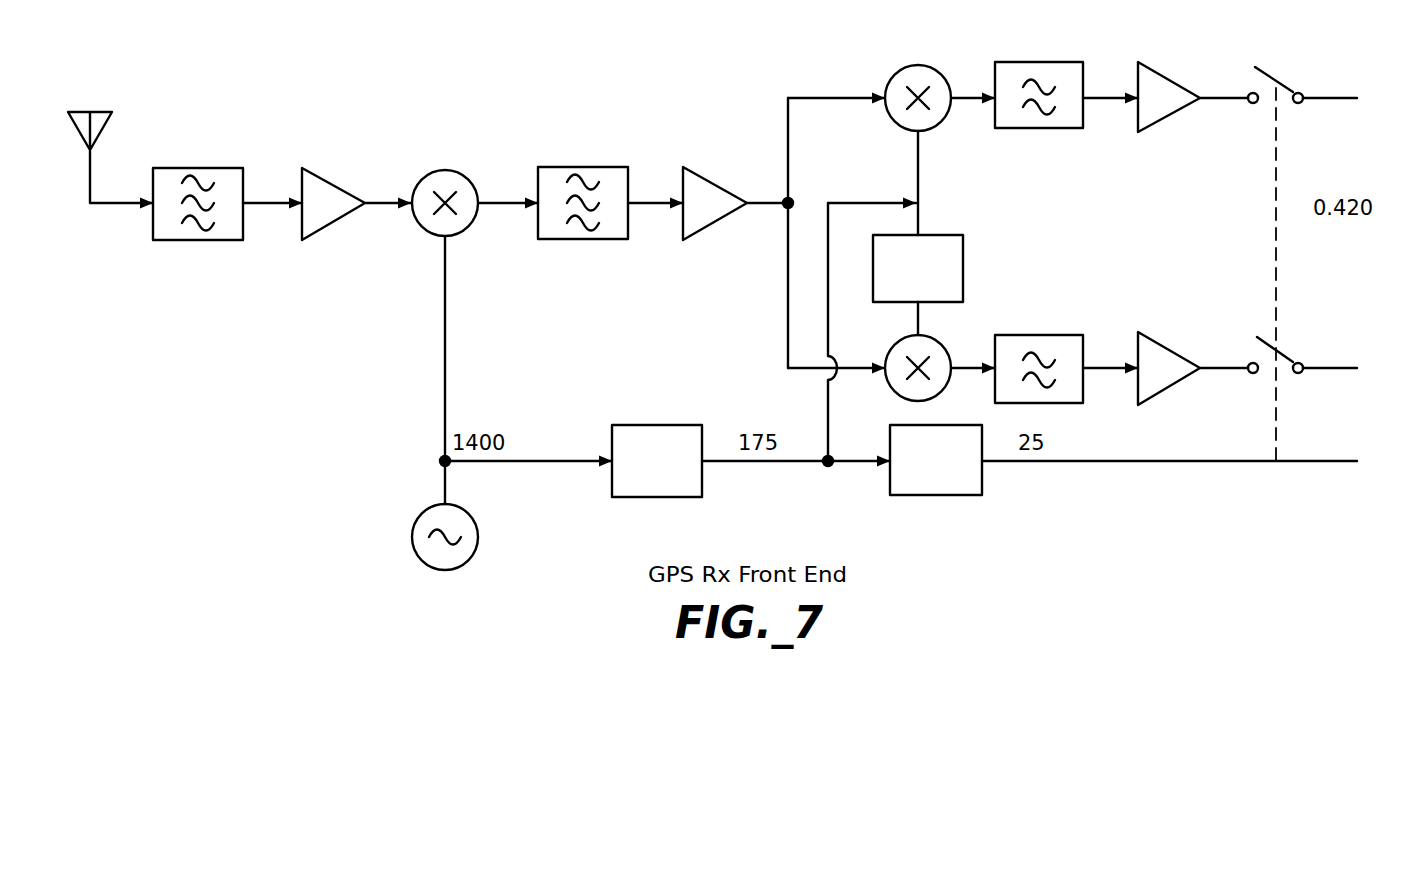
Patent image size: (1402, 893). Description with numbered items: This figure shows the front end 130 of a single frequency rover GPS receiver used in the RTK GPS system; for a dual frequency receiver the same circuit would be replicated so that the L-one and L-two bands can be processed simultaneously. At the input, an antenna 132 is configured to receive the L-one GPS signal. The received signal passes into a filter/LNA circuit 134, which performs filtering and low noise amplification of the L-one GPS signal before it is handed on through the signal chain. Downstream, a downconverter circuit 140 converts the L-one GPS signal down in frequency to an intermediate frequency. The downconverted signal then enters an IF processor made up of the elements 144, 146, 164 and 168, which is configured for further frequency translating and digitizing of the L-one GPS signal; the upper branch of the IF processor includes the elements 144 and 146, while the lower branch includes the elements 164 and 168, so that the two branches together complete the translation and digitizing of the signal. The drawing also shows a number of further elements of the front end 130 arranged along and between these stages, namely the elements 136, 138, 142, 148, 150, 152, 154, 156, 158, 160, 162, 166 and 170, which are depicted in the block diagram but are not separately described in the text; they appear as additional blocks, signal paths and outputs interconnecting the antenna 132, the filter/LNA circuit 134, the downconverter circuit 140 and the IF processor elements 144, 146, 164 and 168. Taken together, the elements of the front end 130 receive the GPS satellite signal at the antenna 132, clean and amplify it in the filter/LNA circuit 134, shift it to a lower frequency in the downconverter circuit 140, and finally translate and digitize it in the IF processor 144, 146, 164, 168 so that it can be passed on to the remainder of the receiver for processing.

The front end 130 is at (257, 477).
The antenna 132 is at (82, 112).
The filter/LNA circuit 134 is at (183, 168).
The amplifier 136 is at (330, 180).
The mixer 138 is at (455, 170).
The downconverter circuit 140 is at (560, 167).
The amplifier 142 is at (708, 178).
The IF processor 144 is at (930, 63).
The IF processor 146 is at (1030, 62).
The amplifier 148 is at (1167, 73).
The in-phase sampling switch 150 is at (1315, 93).
The local oscillator 152 is at (470, 512).
The divide-by-eight divider 154 is at (635, 425).
The divide-by-seven divider 156 is at (982, 472).
The 175 MHz signal line 158 is at (728, 463).
The 25 MHz sampling clock line 160 is at (1070, 463).
The ninety-degree phase shifter 162 is at (965, 268).
The IF processor 164 is at (925, 335).
The low-pass filter 166 is at (1030, 335).
The IF processor 168 is at (1167, 343).
The quadrature sampling switch 170 is at (1315, 363).